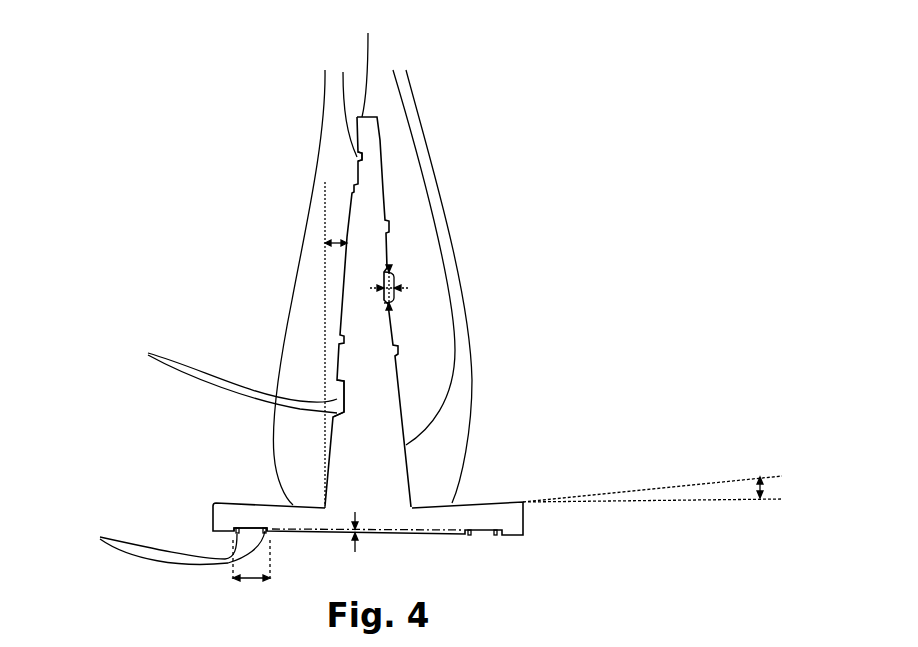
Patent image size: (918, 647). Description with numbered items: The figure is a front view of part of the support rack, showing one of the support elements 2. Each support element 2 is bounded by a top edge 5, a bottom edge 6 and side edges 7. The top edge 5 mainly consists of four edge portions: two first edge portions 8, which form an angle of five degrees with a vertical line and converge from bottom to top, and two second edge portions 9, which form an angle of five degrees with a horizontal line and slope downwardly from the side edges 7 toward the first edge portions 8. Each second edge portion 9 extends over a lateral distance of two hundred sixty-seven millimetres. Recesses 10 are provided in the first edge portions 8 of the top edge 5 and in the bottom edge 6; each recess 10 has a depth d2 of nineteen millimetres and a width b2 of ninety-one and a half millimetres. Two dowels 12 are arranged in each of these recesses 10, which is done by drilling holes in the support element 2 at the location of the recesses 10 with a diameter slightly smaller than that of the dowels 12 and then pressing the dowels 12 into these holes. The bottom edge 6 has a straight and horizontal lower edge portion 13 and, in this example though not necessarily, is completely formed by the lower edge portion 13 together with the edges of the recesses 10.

The support element 2 is at (179, 154).
The top edge 5 is at (427, 55).
The bottom edge 6 is at (386, 473).
The side edge 7 is at (213, 518).
The first edge portion 8 is at (396, 246).
The second edge portion 9 is at (372, 276).
The recess 10 is at (357, 173).
The dowel 12 is at (204, 449).
The lower edge portion 13 is at (233, 534).
The width b2 is at (394, 276).
The depth d2 is at (394, 300).